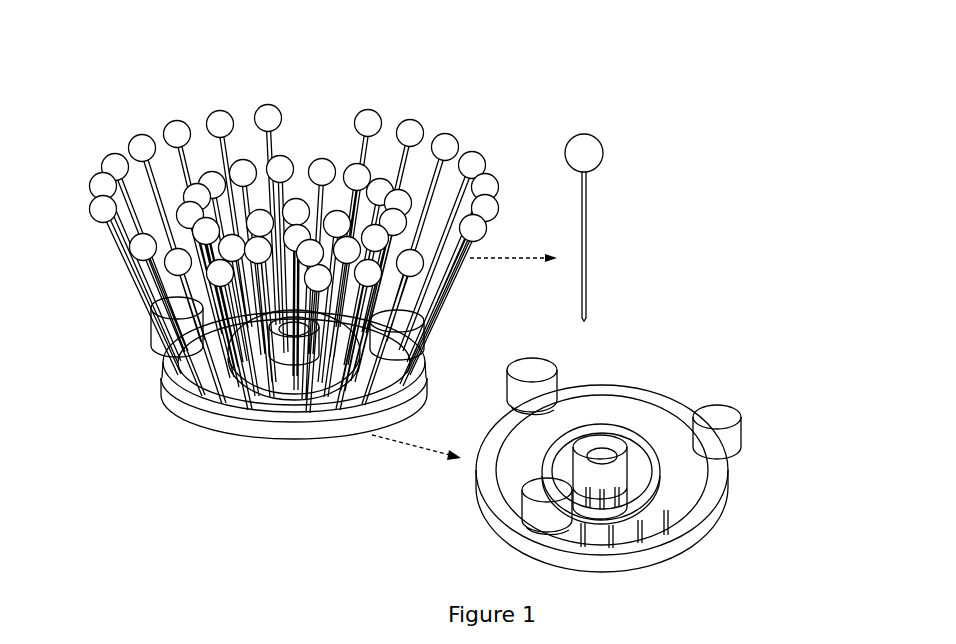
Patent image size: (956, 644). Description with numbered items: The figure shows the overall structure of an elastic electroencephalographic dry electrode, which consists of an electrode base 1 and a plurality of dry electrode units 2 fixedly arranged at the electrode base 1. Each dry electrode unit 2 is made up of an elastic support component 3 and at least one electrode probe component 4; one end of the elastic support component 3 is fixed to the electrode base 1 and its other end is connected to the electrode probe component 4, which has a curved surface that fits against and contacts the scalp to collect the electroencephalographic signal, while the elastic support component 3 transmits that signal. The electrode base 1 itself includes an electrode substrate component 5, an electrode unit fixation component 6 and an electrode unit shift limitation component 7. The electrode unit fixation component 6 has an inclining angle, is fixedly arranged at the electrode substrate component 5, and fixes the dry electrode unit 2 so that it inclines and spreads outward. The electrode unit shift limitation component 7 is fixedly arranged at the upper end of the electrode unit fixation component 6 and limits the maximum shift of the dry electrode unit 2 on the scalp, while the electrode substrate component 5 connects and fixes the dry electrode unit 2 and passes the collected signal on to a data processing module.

The electrode base 1 is at (294, 289).
The dry electrode unit 2 is at (446, 133).
The elastic support component 3 is at (587, 240).
The electrode probe component 4 is at (600, 150).
The electrode substrate component 5 is at (643, 445).
The electrode unit fixation component 6 is at (607, 383).
The electrode unit shift limitation component 7 is at (740, 430).